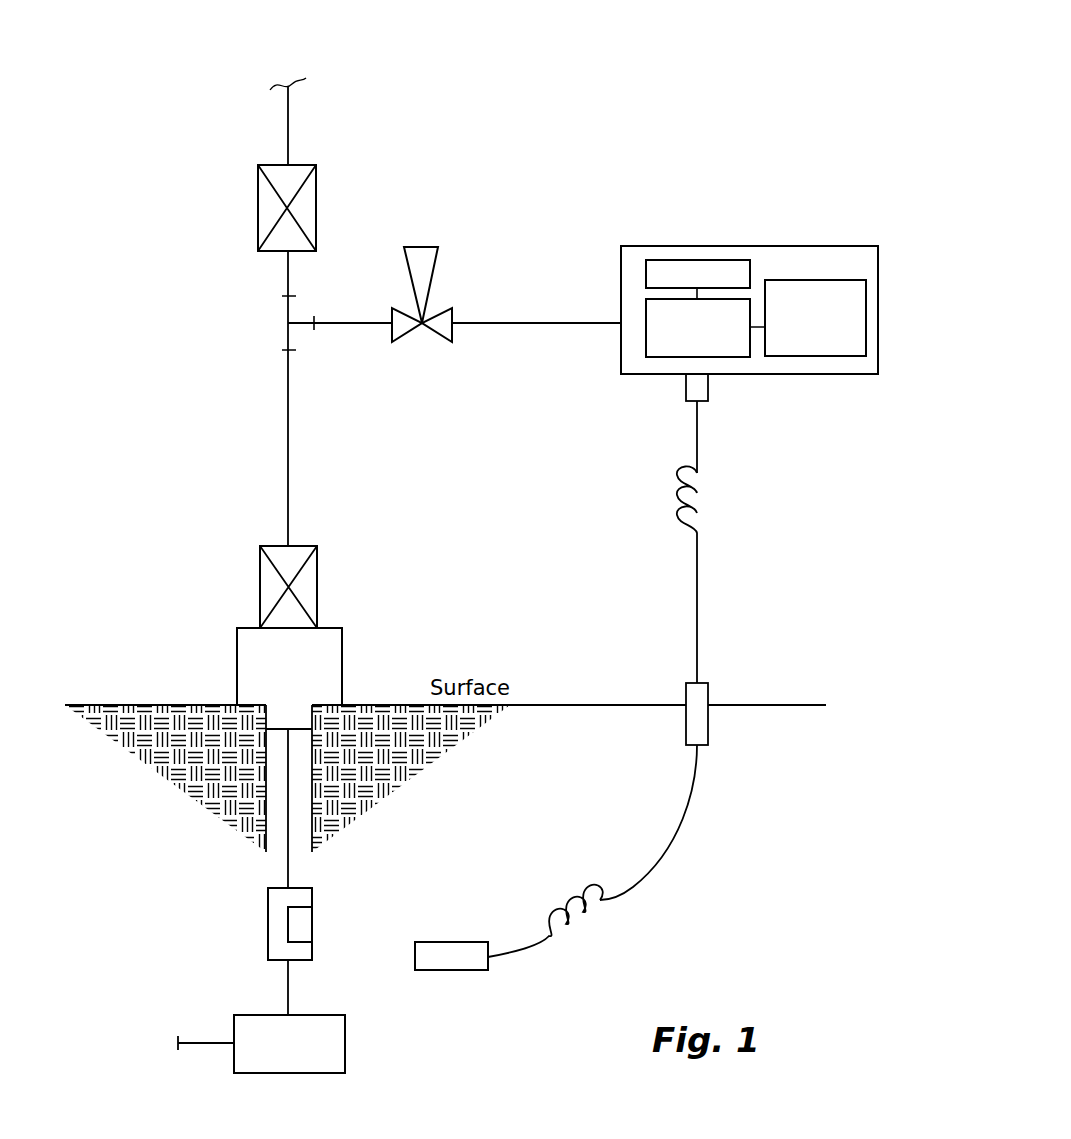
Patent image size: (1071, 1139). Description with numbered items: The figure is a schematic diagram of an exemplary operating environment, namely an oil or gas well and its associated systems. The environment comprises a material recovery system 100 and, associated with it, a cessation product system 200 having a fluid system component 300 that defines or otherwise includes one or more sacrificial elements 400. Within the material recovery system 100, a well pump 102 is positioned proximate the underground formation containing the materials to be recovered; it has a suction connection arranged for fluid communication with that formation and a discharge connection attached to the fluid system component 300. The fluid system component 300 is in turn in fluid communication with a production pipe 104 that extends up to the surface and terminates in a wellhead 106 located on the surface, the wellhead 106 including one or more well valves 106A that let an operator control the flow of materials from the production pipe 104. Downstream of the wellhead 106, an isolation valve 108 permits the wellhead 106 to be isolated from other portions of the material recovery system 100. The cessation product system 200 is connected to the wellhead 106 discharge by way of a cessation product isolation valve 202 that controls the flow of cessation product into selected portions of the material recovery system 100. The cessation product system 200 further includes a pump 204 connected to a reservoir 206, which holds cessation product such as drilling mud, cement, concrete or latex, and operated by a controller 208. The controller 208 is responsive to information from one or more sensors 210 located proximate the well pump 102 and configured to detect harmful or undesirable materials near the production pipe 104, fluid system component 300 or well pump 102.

The material recovery system 100 is at (548, 110).
The well pump 102 is at (316, 1043).
The production pipe 104 is at (288, 867).
The wellhead 106 is at (308, 620).
The well valve 106A is at (260, 580).
The isolation valve 108 is at (308, 196).
The cessation product system 200 is at (727, 302).
The cessation product isolation valve 202 is at (428, 268).
The pump 204 is at (650, 350).
The reservoir 206 is at (838, 283).
The controller 208 is at (655, 260).
The sensor 210 is at (447, 962).
The fluid system component 300 is at (276, 940).
The sacrificial element 400 is at (359, 909).